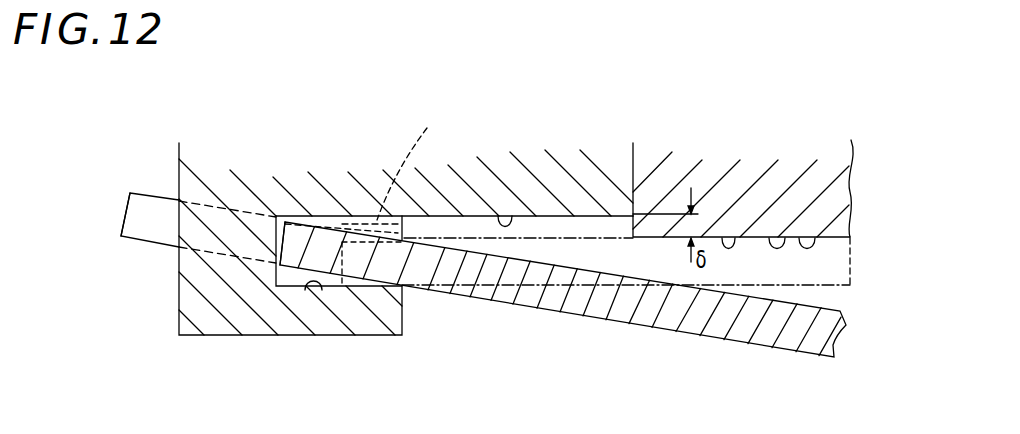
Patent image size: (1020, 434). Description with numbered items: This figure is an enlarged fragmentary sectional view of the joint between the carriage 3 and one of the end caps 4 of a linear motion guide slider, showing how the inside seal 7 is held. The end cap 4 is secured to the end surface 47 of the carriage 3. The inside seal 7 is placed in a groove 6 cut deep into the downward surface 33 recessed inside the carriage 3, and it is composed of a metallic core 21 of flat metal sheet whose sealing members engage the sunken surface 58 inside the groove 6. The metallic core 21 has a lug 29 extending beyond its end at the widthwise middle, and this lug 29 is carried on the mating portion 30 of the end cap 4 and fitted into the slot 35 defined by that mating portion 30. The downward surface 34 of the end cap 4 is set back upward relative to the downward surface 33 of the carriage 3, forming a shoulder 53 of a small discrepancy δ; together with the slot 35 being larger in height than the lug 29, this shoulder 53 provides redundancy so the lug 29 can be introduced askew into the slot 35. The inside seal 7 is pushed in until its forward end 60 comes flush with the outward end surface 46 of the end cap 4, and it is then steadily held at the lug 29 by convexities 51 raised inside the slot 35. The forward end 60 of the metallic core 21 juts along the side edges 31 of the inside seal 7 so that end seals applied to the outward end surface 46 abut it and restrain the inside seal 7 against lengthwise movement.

The carriage 3 is at (753, 198).
The end cap 4 is at (340, 193).
The groove 6 is at (722, 238).
The inside seal 7 is at (525, 310).
The metallic core 21 is at (638, 262).
The lug 29 is at (302, 255).
The mating portion 30 is at (357, 313).
The side edge 31 is at (165, 232).
The downward surface 33 is at (787, 238).
The downward surface 34 is at (497, 214).
The slot 35 is at (318, 291).
The outward end surface 46 is at (178, 158).
The end surface 47 is at (634, 168).
The convexity 51 is at (366, 167).
The shoulder 53 is at (633, 222).
The sunken surface 58 is at (817, 238).
The forward end 60 is at (122, 200).